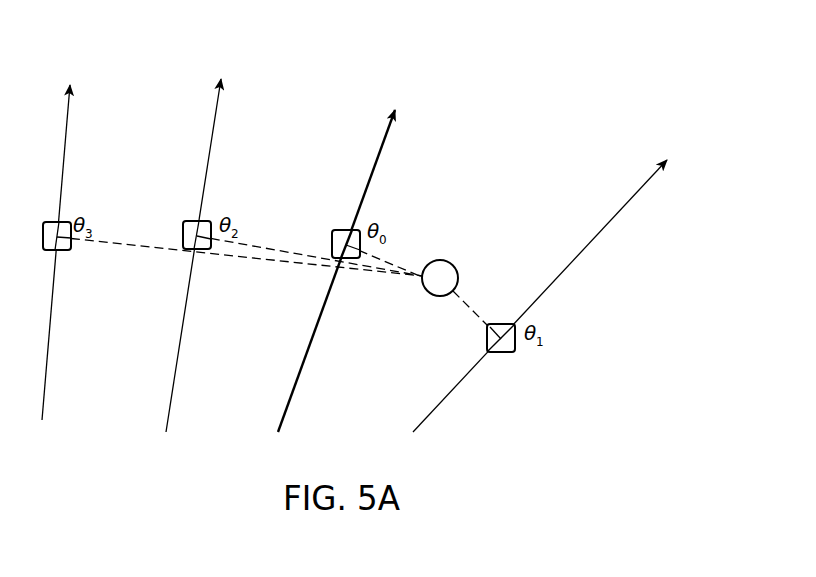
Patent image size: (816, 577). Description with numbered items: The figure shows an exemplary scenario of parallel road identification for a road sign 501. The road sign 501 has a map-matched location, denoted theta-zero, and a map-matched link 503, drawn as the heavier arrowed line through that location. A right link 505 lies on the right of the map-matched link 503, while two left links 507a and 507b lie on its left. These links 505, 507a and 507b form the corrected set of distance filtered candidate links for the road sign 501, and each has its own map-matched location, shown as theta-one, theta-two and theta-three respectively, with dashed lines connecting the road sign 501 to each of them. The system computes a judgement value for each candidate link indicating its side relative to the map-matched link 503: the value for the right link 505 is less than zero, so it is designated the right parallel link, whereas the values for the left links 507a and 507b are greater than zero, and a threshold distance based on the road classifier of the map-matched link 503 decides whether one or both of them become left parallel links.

The road sign 501 is at (453, 266).
The map-matched link 503 is at (386, 141).
The right link 505 is at (628, 197).
The left link 507a is at (217, 117).
The left link 507b is at (68, 116).